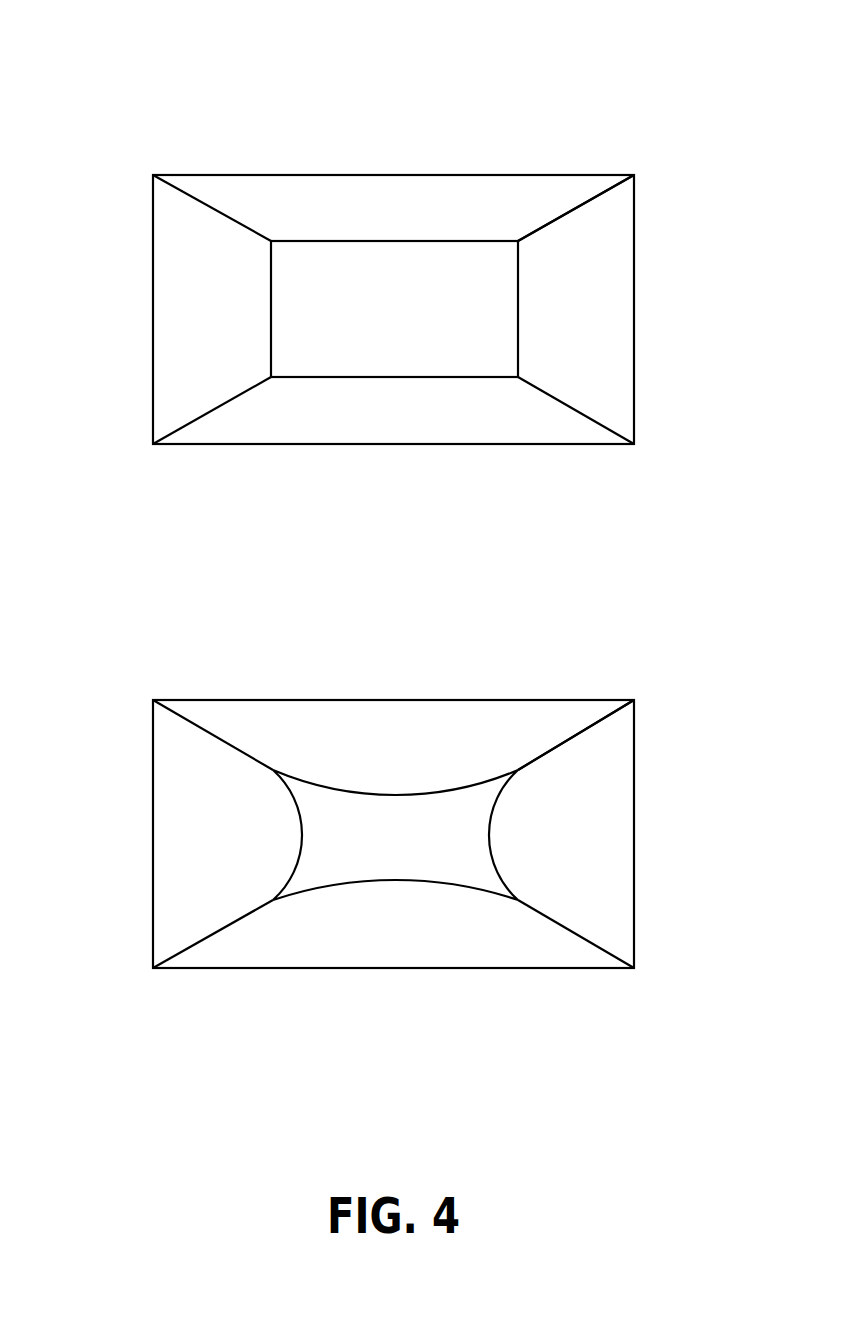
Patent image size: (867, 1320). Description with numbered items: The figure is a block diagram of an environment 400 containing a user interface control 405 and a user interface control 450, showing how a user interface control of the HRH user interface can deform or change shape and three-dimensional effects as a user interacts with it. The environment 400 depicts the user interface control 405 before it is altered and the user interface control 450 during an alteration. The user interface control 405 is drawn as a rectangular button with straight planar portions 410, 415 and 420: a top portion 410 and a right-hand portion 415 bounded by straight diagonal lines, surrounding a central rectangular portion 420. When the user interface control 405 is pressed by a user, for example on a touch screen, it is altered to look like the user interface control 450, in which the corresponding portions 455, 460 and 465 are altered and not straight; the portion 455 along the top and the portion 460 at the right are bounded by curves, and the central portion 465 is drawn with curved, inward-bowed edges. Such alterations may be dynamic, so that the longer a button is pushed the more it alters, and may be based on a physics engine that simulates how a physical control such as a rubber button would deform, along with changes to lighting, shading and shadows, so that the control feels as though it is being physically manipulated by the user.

The environment 400 is at (167, 63).
The user interface control 405 is at (592, 170).
The straight planar portion 410 is at (416, 232).
The straight planar portion 415 is at (595, 336).
The straight planar portion 420 is at (416, 338).
The user interface control 450 is at (572, 696).
The altered portion 455 is at (423, 768).
The altered portion 460 is at (593, 842).
The altered portion 465 is at (415, 862).